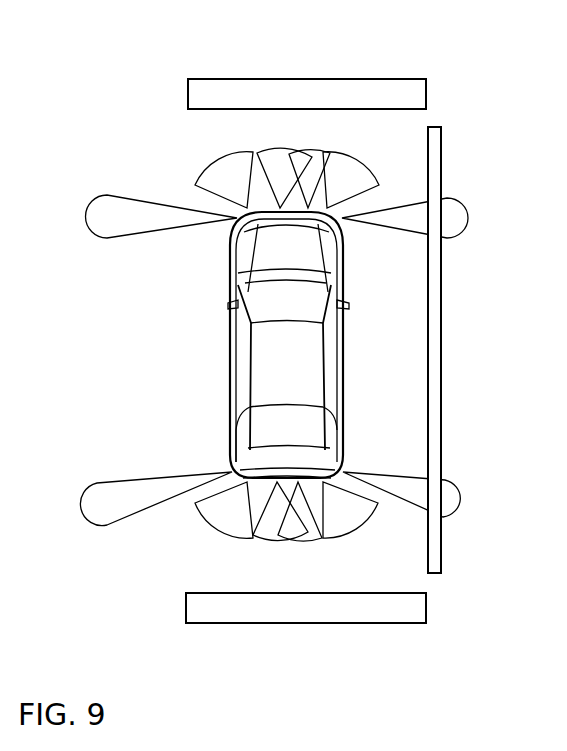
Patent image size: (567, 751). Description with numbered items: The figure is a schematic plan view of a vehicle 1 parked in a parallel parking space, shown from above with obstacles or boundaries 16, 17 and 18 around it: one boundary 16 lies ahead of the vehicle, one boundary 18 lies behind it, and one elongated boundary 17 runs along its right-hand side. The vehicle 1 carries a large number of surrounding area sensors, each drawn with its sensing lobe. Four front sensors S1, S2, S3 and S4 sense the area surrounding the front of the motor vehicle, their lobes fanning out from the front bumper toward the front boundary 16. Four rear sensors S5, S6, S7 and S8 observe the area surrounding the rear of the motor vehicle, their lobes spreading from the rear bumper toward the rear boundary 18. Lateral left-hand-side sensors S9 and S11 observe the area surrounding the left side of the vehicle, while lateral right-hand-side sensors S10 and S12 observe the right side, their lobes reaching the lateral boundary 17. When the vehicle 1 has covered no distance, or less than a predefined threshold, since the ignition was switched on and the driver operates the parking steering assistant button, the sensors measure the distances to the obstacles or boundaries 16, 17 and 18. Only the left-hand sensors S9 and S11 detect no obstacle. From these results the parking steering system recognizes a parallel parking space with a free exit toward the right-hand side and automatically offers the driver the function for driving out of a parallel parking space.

The vehicle 1 is at (232, 370).
The obstacle or boundary 16 is at (335, 88).
The obstacle or boundary 17 is at (437, 372).
The obstacle or boundary 18 is at (331, 615).
The front sensor S1 is at (222, 172).
The front sensor S2 is at (283, 164).
The front sensor S3 is at (314, 164).
The front sensor S4 is at (360, 175).
The rear sensor S5 is at (215, 517).
The rear sensor S6 is at (279, 526).
The rear sensor S7 is at (306, 526).
The rear sensor S8 is at (356, 517).
The lateral left-hand-side sensor S9 is at (141, 216).
The lateral right-hand-side sensor S10 is at (441, 218).
The lateral left-hand-side sensor S11 is at (135, 499).
The lateral right-hand-side sensor S12 is at (441, 494).